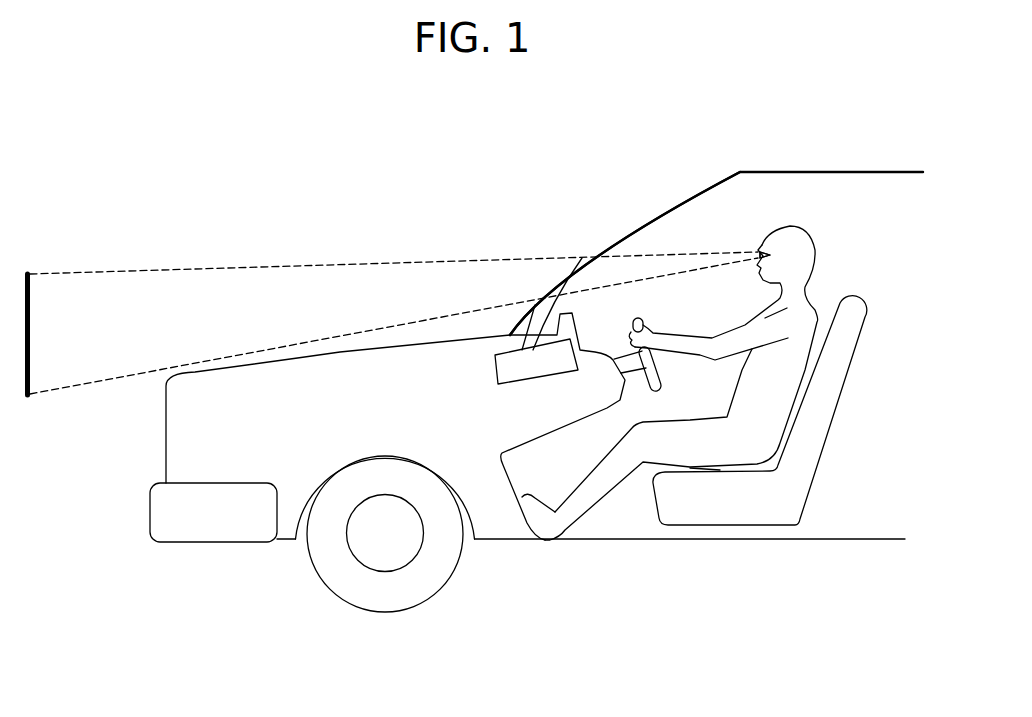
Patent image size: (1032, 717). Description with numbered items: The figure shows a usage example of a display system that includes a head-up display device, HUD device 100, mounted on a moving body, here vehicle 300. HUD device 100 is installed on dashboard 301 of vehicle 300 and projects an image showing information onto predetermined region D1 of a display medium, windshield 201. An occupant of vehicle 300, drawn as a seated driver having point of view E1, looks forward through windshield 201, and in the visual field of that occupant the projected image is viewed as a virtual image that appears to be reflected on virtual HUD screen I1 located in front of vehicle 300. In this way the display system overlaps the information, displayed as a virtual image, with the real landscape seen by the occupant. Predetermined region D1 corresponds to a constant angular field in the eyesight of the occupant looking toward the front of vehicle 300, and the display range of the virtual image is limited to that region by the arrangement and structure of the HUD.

The HUD device 100 is at (518, 370).
The windshield 201 is at (695, 190).
The vehicle 300 is at (765, 541).
The dashboard 301 is at (597, 395).
The predetermined region D1 is at (547, 285).
The point of view E1 is at (759, 252).
The virtual HUD screen I1 is at (29, 274).